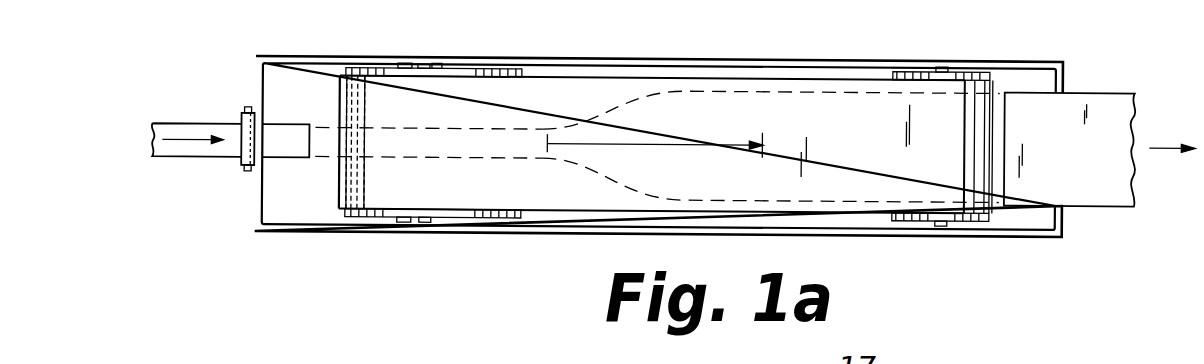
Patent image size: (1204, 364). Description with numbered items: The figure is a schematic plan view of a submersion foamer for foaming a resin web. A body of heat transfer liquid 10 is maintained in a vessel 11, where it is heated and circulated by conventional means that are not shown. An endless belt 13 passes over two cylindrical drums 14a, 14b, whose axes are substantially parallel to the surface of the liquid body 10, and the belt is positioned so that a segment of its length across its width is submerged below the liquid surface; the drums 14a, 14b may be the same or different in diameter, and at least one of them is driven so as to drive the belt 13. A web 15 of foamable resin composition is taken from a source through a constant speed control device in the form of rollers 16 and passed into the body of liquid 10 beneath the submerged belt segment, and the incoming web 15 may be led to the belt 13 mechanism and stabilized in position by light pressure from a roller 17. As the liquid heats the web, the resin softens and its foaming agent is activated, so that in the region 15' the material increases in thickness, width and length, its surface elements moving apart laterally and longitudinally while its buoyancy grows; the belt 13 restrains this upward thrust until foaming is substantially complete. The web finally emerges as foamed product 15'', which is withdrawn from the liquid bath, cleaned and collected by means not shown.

The body of heat transfer liquid 10 is at (326, 201).
The vessel 11 is at (256, 196).
The endless belt 13 is at (576, 113).
The cylindrical drum 14a is at (487, 69).
The cylindrical drum 14b is at (925, 74).
The web of foamable resin composition 15 is at (218, 164).
The foaming region 15' is at (657, 145).
The foamed product 15'' is at (1100, 150).
The rollers 16 is at (249, 118).
The roller 17 is at (405, 62).